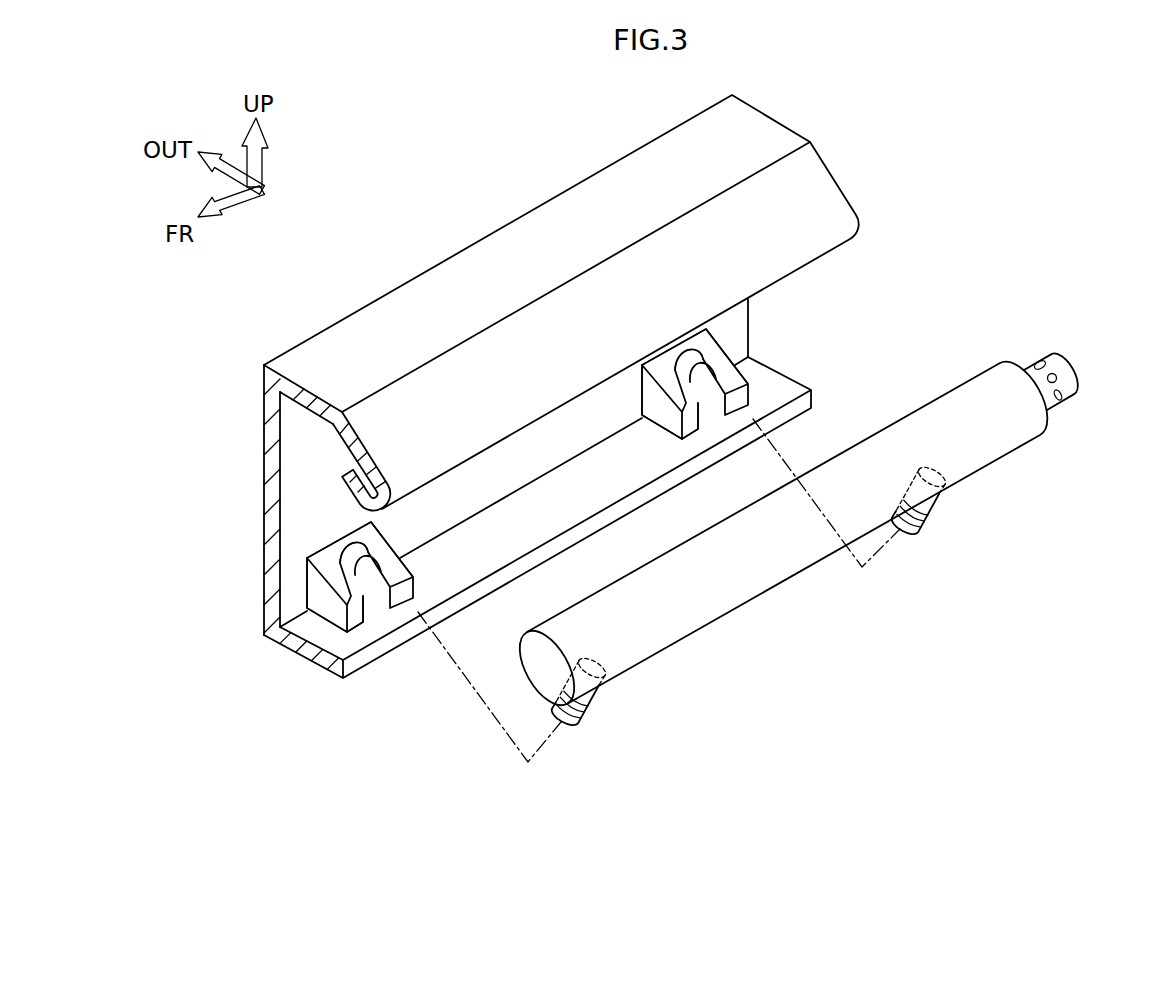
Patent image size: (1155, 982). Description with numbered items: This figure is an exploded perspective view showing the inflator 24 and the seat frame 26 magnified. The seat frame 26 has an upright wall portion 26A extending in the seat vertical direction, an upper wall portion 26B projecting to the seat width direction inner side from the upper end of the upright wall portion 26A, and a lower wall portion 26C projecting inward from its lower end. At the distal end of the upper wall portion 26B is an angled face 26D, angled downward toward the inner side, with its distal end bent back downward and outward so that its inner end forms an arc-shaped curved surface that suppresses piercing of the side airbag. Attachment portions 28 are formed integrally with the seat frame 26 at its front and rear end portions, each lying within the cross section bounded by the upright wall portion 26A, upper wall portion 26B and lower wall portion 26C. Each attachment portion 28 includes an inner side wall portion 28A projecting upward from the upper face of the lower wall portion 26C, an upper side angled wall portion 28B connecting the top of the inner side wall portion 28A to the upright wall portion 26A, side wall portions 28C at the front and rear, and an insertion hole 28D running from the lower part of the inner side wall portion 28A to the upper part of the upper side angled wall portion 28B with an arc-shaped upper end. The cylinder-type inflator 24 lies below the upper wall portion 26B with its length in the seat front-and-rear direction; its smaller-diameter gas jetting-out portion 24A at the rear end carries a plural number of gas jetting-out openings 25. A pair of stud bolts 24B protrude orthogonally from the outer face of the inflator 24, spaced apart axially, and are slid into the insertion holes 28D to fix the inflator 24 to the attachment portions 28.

The inflator 24 is at (771, 531).
The gas jetting-out portion 24A is at (1040, 354).
The stud bolt 24B is at (587, 710).
The gas jetting-out opening 25 is at (1074, 393).
The seat frame 26 is at (519, 406).
The upright wall portion 26A is at (262, 500).
The upper wall portion 26B is at (387, 313).
The lower wall portion 26C is at (305, 658).
The angled face 26D is at (488, 352).
The attachment portion 28 is at (506, 503).
The inner side wall portion 28A is at (362, 620).
The upper side angled wall portion 28B is at (329, 556).
The side wall portion 28C is at (323, 613).
The insertion hole 28D is at (378, 588).